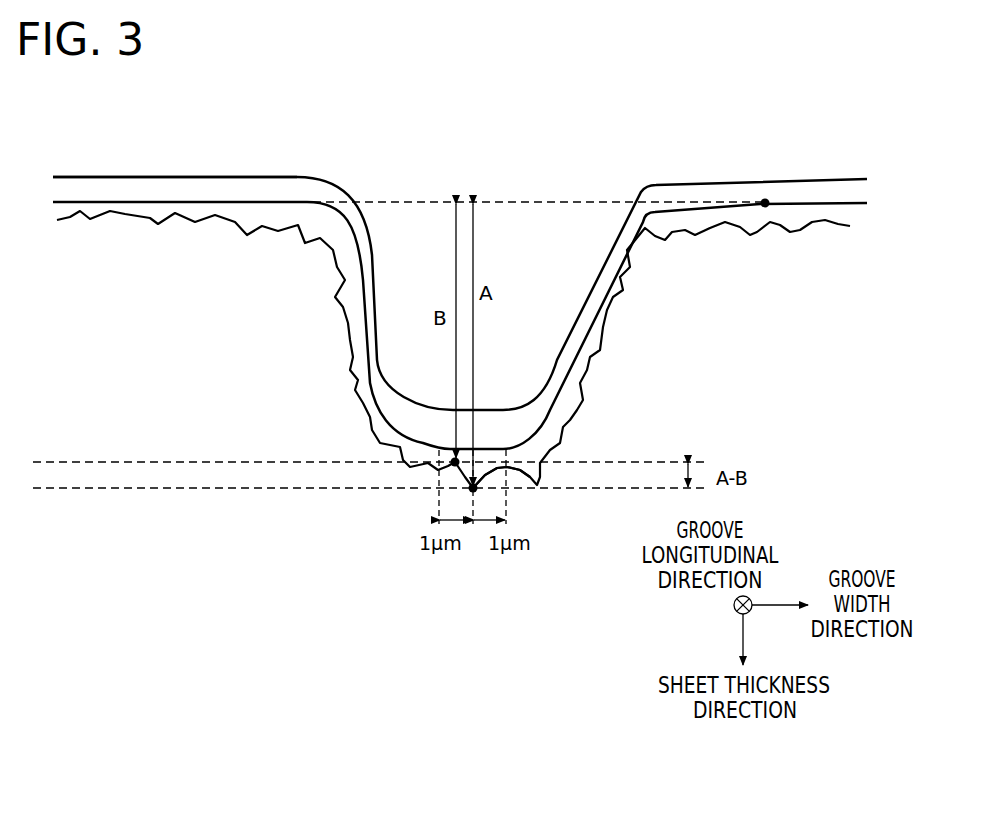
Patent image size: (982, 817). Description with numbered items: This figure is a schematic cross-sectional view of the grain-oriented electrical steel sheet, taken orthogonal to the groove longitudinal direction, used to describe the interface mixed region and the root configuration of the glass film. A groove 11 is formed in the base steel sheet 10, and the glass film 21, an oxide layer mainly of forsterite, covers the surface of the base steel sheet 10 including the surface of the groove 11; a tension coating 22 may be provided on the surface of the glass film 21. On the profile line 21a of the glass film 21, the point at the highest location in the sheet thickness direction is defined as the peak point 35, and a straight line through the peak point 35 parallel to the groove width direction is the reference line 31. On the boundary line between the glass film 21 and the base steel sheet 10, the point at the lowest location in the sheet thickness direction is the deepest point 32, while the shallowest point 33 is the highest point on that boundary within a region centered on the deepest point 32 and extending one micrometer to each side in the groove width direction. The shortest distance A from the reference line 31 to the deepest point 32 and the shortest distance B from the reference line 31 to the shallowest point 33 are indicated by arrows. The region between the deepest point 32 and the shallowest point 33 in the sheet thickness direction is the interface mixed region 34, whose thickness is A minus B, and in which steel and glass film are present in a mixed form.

The base steel sheet 10 is at (780, 373).
The groove 11 is at (412, 188).
The glass film 21 is at (762, 218).
The profile line 21a is at (613, 228).
The tension coating 22 is at (813, 192).
The reference line 31 is at (542, 202).
The deepest point 32 is at (471, 488).
The shallowest point 33 is at (452, 464).
The interface mixed region 34 is at (500, 480).
The peak point 35 is at (765, 202).